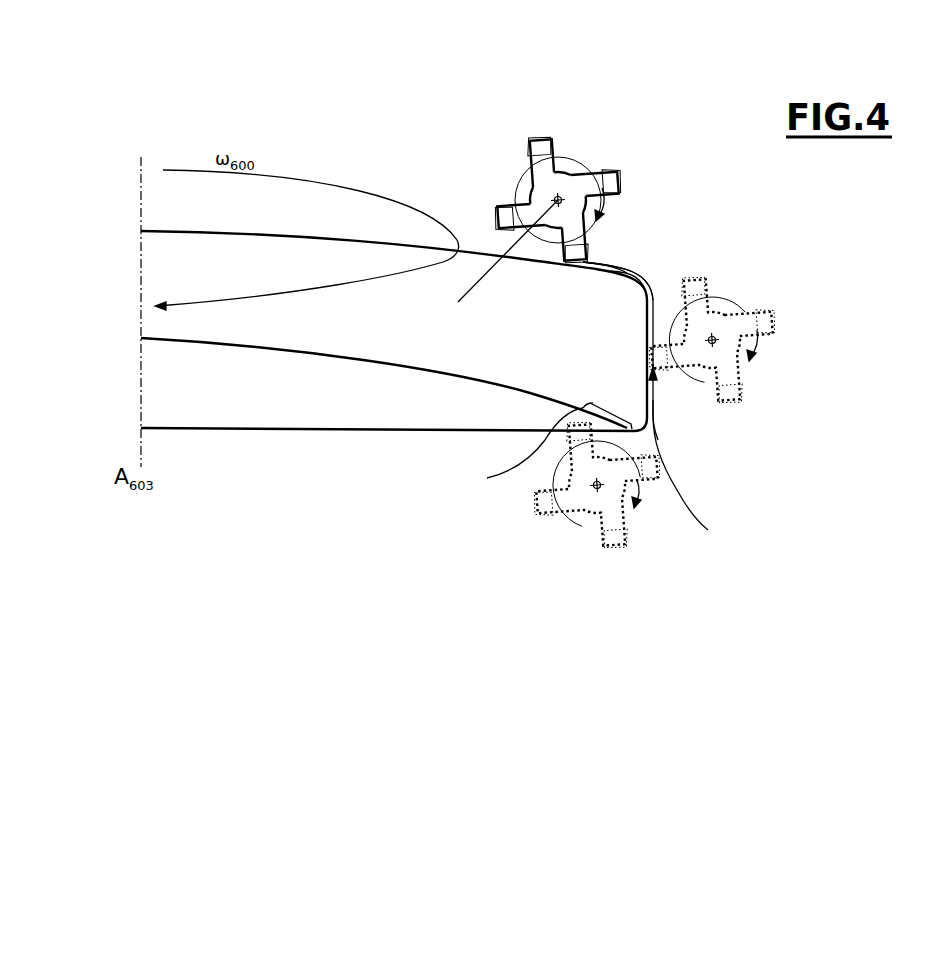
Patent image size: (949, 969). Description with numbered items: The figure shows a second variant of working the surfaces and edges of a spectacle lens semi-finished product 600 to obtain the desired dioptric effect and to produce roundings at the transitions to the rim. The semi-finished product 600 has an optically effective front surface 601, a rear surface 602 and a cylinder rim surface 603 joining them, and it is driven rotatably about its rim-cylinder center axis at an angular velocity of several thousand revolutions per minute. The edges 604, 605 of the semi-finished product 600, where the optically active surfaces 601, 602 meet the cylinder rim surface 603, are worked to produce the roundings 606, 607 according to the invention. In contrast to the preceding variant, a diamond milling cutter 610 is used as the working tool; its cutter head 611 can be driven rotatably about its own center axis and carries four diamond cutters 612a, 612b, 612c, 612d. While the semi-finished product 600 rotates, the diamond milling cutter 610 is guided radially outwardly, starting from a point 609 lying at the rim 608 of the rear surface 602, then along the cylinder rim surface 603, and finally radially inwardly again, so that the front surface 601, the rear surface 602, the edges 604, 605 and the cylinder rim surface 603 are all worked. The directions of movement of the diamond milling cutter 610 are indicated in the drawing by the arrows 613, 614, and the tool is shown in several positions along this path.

The semi-finished product 600 is at (441, 207).
The optically effective front surface 601 is at (320, 238).
The rear surface 602 is at (387, 362).
The cylinder rim surface 603 is at (653, 395).
The edge 604 is at (653, 268).
The edge 605 is at (669, 443).
The rounding 606 is at (652, 300).
The rounding 607 is at (702, 479).
The rim of the rear surface 608 is at (610, 410).
The starting point 609 is at (516, 448).
The diamond milling cutter 610 is at (654, 343).
The cutter head 611 is at (573, 205).
The diamond cutter 612a is at (562, 262).
The diamond cutter 612b is at (617, 203).
The diamond cutter 612c is at (568, 185).
The diamond cutter 612d is at (510, 203).
The arrow 613 is at (653, 423).
The arrow 614 is at (627, 273).